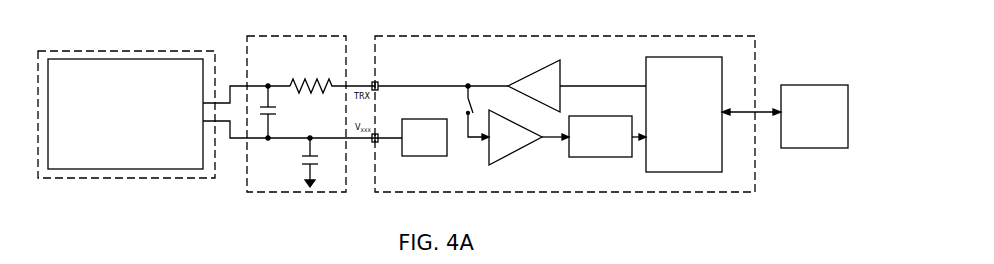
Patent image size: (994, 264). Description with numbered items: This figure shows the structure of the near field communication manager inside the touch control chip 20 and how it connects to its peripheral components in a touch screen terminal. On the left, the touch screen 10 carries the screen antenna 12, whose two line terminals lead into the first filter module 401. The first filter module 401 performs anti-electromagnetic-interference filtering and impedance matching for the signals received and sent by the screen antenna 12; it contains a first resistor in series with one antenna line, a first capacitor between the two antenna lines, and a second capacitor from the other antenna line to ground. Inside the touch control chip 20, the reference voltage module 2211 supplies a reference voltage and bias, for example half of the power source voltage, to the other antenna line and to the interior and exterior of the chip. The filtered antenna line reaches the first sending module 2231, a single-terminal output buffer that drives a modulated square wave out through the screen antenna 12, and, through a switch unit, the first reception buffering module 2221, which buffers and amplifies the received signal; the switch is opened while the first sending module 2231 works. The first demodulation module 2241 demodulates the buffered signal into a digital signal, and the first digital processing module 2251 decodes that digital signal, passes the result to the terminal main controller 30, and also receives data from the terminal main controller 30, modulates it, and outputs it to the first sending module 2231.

The touch screen 10 is at (126, 99).
The screen antenna 12 is at (125, 94).
The first filter module 401 is at (311, 97).
The touch control chip 20 is at (565, 97).
The reference voltage module 2211 is at (427, 149).
The first reception buffering module 2221 is at (518, 144).
The first sending module 2231 is at (527, 77).
The first demodulation module 2241 is at (600, 147).
The first digital processing module 2251 is at (665, 107).
The terminal main controller 30 is at (814, 102).